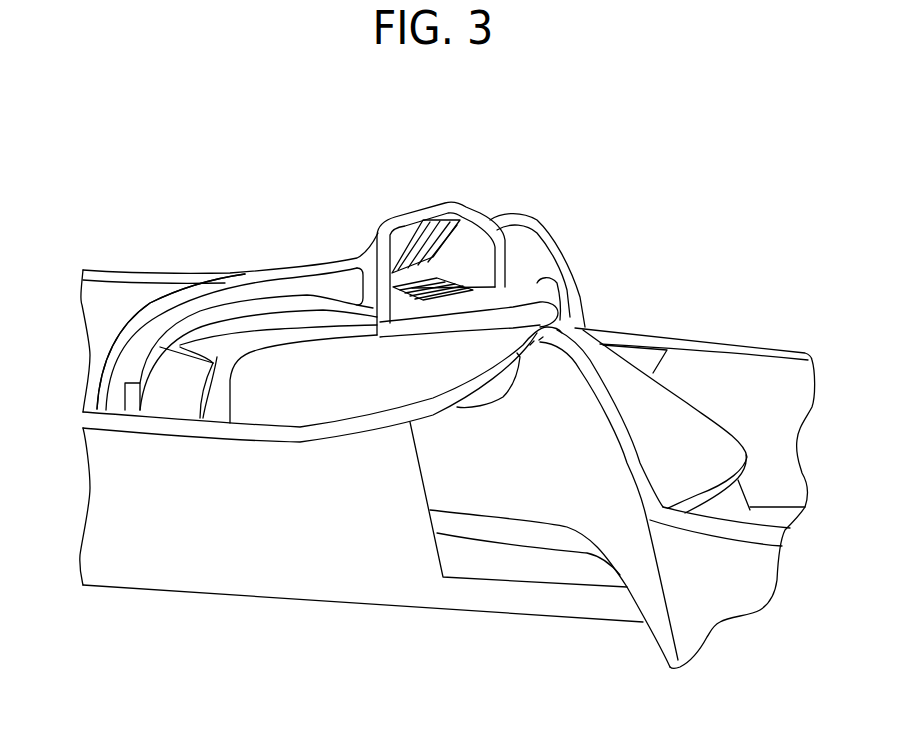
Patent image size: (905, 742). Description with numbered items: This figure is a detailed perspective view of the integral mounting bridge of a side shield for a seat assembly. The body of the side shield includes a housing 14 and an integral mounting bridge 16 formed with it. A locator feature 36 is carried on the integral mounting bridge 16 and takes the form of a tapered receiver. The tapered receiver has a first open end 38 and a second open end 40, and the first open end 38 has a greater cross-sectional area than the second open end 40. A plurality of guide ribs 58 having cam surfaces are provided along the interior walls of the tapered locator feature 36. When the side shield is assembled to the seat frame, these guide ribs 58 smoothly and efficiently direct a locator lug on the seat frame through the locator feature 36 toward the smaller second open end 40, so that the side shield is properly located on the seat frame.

The housing 14 is at (273, 560).
The integral mounting bridge 16 is at (233, 281).
The locator feature 36 is at (347, 232).
The first open end 38 is at (450, 220).
The second open end 40 is at (412, 267).
The guide ribs 58 is at (440, 240).